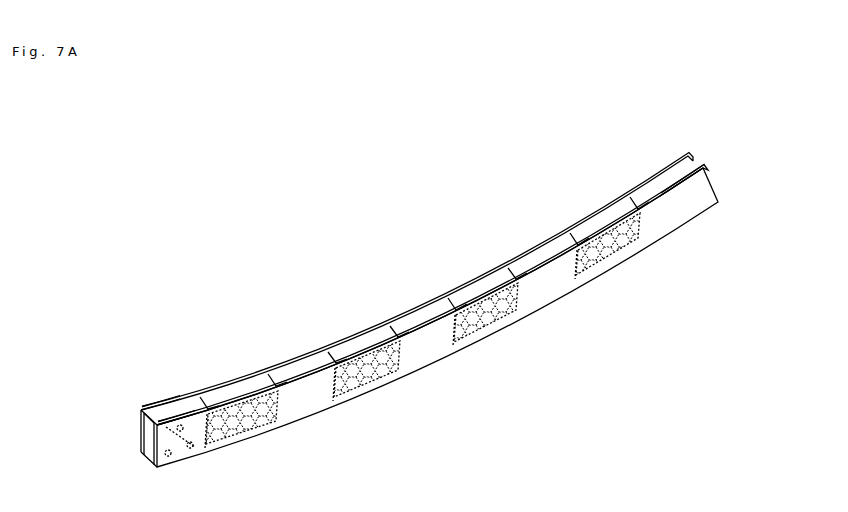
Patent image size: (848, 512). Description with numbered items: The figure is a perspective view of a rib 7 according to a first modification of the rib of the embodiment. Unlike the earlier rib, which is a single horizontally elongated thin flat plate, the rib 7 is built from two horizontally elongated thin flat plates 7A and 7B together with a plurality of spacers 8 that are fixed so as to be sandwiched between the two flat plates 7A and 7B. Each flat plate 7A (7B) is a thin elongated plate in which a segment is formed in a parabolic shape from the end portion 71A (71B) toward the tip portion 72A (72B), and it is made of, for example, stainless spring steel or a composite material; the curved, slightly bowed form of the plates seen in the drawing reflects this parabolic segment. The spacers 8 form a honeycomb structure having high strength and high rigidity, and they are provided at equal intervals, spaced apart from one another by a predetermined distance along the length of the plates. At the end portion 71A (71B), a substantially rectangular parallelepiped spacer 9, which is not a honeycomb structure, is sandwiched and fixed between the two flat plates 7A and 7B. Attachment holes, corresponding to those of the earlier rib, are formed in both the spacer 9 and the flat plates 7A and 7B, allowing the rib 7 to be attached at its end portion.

The rib 7 is at (462, 176).
The flat plate 7A is at (705, 188).
The flat plate 7B is at (697, 166).
The spacer 8 is at (236, 393).
The spacer 9 is at (137, 429).
The end portion 71A is at (180, 412).
The end portion 71B is at (147, 405).
The tip portion 72A is at (690, 188).
The tip portion 72B is at (675, 152).